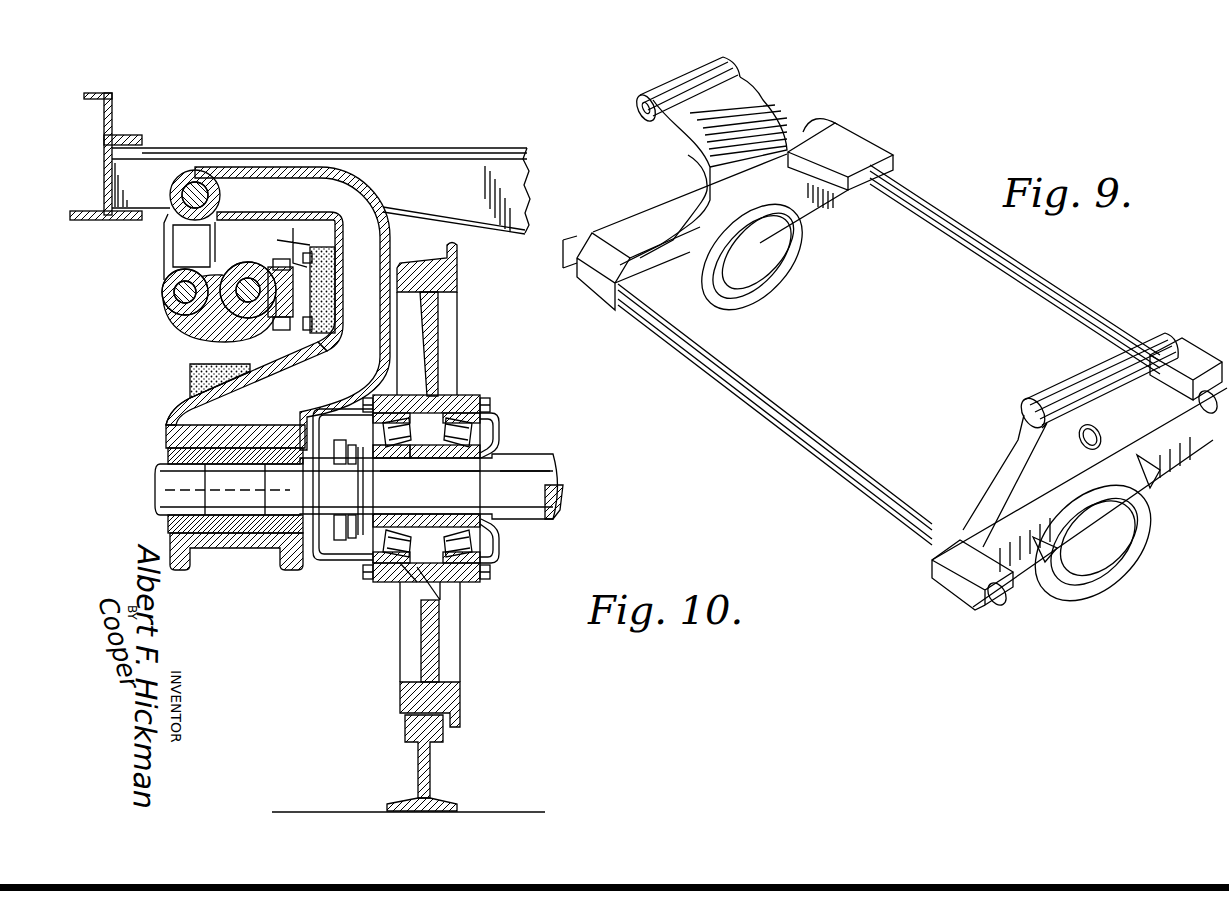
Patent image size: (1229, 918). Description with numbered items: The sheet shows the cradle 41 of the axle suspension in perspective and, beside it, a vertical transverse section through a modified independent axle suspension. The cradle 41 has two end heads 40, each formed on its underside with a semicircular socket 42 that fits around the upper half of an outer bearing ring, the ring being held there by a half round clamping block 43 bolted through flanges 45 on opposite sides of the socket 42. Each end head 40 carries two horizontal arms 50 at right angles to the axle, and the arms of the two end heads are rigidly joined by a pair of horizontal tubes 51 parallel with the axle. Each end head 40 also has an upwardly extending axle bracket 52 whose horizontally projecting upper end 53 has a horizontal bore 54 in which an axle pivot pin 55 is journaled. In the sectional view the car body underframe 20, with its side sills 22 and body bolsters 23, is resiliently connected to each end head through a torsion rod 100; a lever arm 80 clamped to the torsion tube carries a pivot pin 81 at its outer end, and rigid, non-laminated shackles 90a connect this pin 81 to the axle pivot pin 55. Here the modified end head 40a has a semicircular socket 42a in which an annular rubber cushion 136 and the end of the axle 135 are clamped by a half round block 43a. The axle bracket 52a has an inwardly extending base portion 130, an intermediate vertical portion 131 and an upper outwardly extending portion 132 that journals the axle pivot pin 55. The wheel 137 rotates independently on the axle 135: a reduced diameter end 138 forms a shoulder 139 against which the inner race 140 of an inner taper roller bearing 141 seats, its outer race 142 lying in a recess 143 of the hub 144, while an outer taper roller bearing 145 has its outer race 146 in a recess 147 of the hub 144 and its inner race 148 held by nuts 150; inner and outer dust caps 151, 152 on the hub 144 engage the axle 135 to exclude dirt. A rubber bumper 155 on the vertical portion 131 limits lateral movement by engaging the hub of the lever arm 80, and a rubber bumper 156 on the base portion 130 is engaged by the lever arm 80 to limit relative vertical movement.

In FIG. 10, the underframe 20 is at (480, 146).
In FIG. 10, the side sills 22 is at (113, 131).
In FIG. 10, the body bolsters 23 is at (512, 172).
In FIG. 9, the end head 40 is at (876, 139).
In FIG. 10, the end head 40a is at (168, 405).
In FIG. 10, the cradle 41 is at (165, 419).
In FIG. 9, the cradle 41 is at (1003, 291).
In FIG. 9, the semicircular socket 42 is at (760, 252).
In FIG. 10, the semicircular socket 42a is at (228, 430).
In FIG. 9, the half round clamping block 43 is at (744, 302).
In FIG. 10, the half round clamping block 43a is at (236, 558).
In FIG. 9, the flanges 45 is at (1157, 487).
In FIG. 9, the horizontal arms 50 is at (602, 264).
In FIG. 9, the horizontal tubes 51 is at (1090, 318).
In FIG. 9, the axle bracket 52 is at (765, 100).
In FIG. 10, the axle bracket 52a is at (370, 191).
In FIG. 9, the upper end 53 is at (686, 85).
In FIG. 9, the horizontal bore 54 is at (642, 114).
In FIG. 10, the axle pivot pin 55 is at (221, 192).
In FIG. 10, the lever arm 80 is at (197, 338).
In FIG. 10, the lever arm pivot pin 81 is at (162, 300).
In FIG. 10, the rigid shackles 90a is at (163, 237).
In FIG. 10, the torsion rod 100 is at (174, 316).
In FIG. 10, the base portion 130 is at (272, 366).
In FIG. 10, the intermediate vertical portion 131 is at (336, 272).
In FIG. 10, the upper horizontally outwardly extending portion 132 is at (283, 213).
In FIG. 10, the axle 135 is at (555, 456).
In FIG. 10, the annular cushion 136 is at (167, 457).
In FIG. 10, the car wheel 137 is at (459, 701).
In FIG. 10, the reduced diameter end 138 is at (430, 478).
In FIG. 10, the shoulder 139 is at (497, 475).
In FIG. 10, the inner race 140 is at (493, 460).
In FIG. 10, the inner taper roller bearing 141 is at (493, 425).
In FIG. 10, the outer race 142 is at (481, 580).
In FIG. 10, the recess 143 is at (455, 597).
In FIG. 10, the hub 144 is at (480, 400).
In FIG. 10, the outer taper roller bearing 145 is at (365, 554).
In FIG. 10, the outer race 146 is at (385, 582).
In FIG. 10, the recess 147 is at (417, 584).
In FIG. 10, the inner race 148 is at (393, 467).
In FIG. 10, the nuts 150 is at (340, 564).
In FIG. 10, the inner dust cap 151 is at (499, 547).
In FIG. 10, the outer dust cap 152 is at (313, 562).
In FIG. 10, the rubber bumper 155 is at (277, 241).
In FIG. 10, the rubber bumper 156 is at (188, 380).